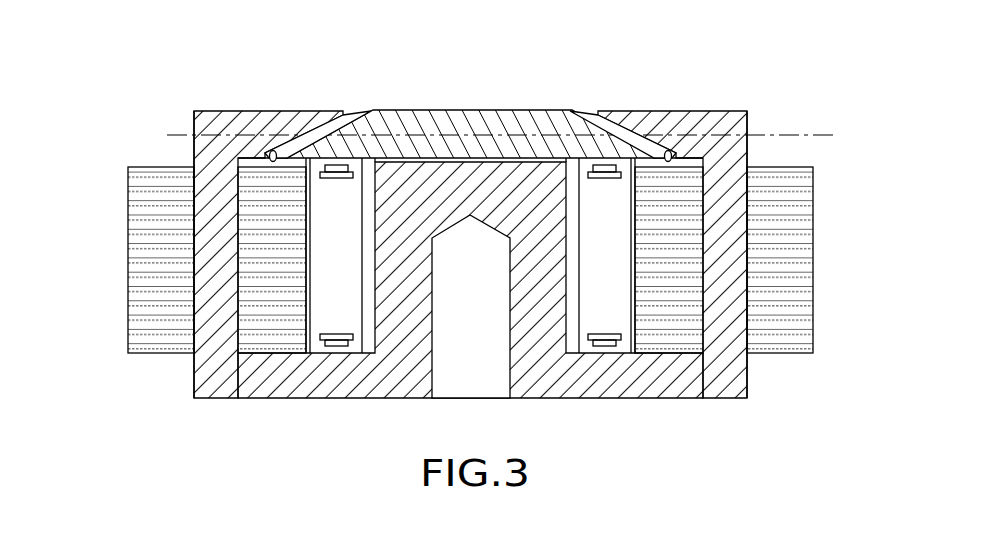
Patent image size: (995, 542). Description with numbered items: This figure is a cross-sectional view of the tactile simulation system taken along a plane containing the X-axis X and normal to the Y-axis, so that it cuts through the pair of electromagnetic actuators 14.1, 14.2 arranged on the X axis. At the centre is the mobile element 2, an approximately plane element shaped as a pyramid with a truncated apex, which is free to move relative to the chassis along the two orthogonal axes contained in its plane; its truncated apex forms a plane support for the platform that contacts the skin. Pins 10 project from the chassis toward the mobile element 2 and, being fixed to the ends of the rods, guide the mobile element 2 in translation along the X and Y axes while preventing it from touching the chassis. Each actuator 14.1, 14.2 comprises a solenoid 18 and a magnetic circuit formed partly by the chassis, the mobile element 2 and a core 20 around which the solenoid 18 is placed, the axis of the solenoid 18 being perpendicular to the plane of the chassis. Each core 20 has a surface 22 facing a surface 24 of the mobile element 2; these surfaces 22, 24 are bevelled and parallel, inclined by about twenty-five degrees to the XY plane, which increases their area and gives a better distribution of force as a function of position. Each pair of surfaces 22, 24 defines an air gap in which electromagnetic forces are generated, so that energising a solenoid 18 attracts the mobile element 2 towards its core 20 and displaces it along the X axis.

The mobile element 2 is at (573, 95).
The pin 10 is at (604, 179).
The electromagnetic actuator 14.1 is at (205, 70).
The electromagnetic actuator 14.2 is at (745, 68).
The solenoid 18 is at (128, 290).
The core 20 is at (222, 125).
The surface of the core 22 is at (273, 150).
The surface of the mobile element 24 is at (313, 133).
The X-axis X is at (823, 135).